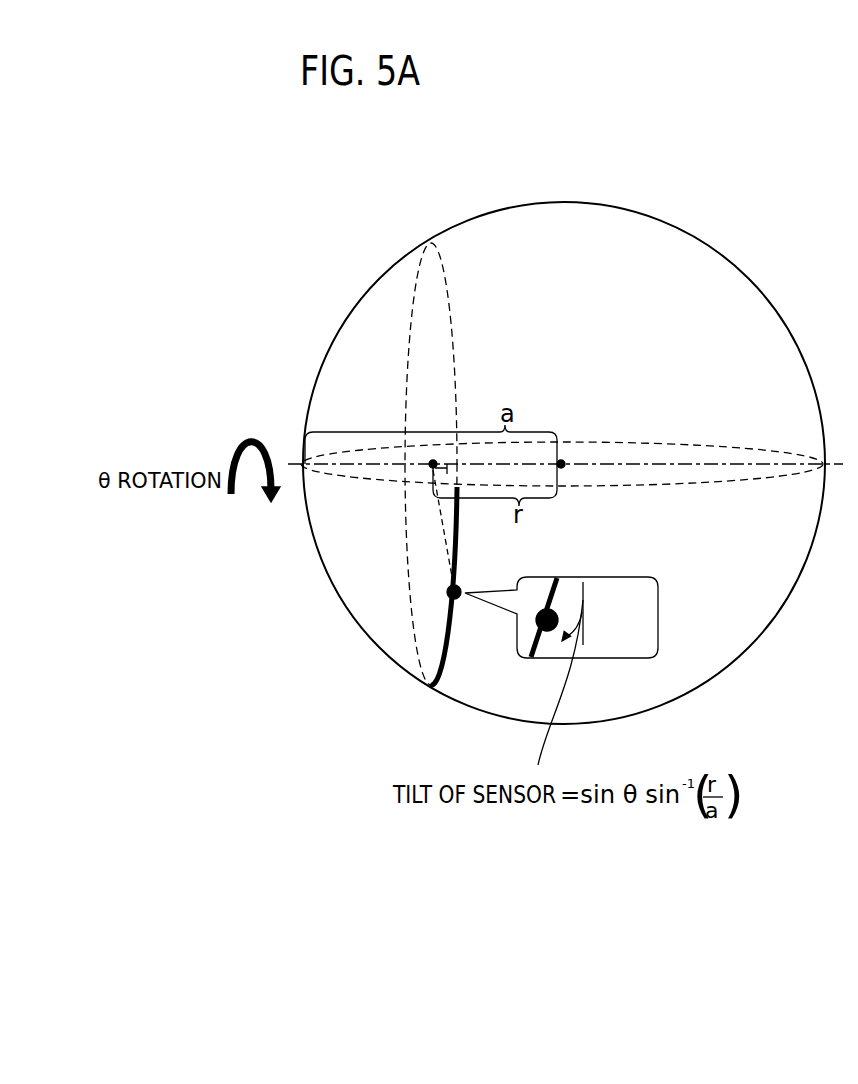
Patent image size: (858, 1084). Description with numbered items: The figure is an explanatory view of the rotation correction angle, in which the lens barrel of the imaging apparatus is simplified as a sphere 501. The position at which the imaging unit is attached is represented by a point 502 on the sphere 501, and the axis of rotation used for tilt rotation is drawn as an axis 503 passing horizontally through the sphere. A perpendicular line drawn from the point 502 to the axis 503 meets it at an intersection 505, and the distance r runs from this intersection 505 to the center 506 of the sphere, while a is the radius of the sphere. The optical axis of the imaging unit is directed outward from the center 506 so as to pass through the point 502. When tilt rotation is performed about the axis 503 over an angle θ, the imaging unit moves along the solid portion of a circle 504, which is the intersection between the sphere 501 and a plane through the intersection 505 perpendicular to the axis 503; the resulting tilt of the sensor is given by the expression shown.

The sphere 501 is at (351, 316).
The point 502 is at (447, 592).
The axis 503 is at (296, 462).
The circle 504 is at (450, 293).
The intersection 505 is at (431, 466).
The center 506 is at (563, 461).